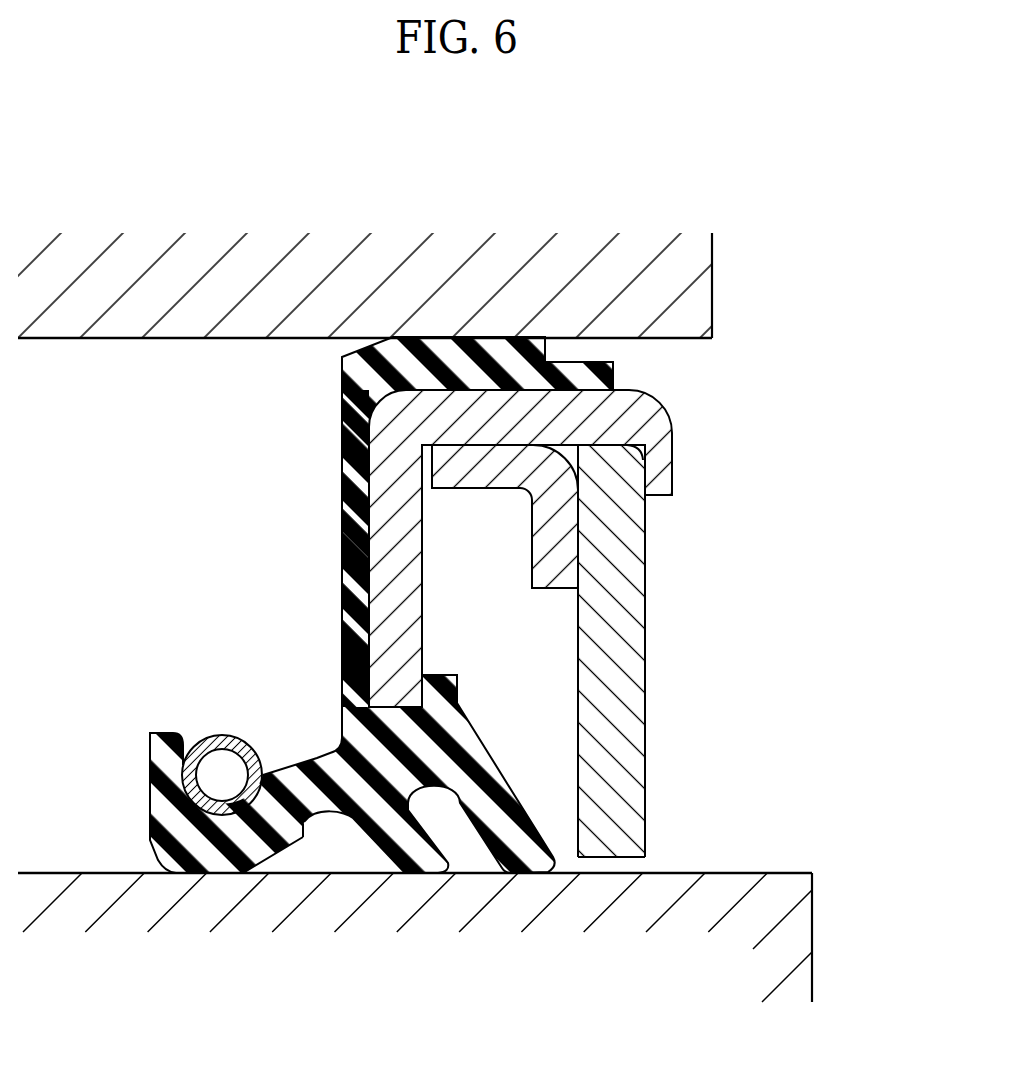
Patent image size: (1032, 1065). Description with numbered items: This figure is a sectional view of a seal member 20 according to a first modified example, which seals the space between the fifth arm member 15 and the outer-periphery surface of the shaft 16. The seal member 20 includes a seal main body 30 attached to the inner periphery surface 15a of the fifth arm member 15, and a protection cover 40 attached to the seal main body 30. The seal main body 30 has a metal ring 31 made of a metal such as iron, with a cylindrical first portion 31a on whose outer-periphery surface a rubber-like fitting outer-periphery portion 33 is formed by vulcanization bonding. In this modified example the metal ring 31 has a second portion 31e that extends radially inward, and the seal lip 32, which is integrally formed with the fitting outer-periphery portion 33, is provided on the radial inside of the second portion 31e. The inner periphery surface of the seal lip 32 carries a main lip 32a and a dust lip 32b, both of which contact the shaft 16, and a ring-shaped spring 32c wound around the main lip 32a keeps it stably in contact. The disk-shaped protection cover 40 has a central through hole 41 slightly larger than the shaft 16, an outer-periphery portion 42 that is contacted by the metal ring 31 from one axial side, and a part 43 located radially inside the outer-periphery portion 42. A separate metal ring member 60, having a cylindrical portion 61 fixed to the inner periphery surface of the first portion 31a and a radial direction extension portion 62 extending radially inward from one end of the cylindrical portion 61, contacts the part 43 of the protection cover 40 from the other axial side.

The fifth arm member 15 is at (427, 308).
The inner periphery surface 15a is at (652, 338).
The shaft 16 is at (812, 930).
The seal member 20 is at (479, 592).
The seal main body 30 is at (447, 592).
The metal ring 31 is at (495, 443).
The first portion 31a is at (538, 405).
The second portion 31e is at (383, 510).
The seal lip 32 is at (352, 819).
The main lip 32a is at (193, 848).
The dust lip 32b is at (427, 852).
The ring-shaped spring 32c is at (213, 735).
The fitting outer-periphery portion 33 is at (428, 352).
The protection cover 40 is at (661, 658).
The through hole 41 is at (622, 857).
The outer-periphery portion 42 is at (630, 457).
The part 43 is at (597, 548).
The ring member 60 is at (505, 563).
The cylindrical portion 61 is at (448, 477).
The radial direction extension portion 62 is at (552, 567).